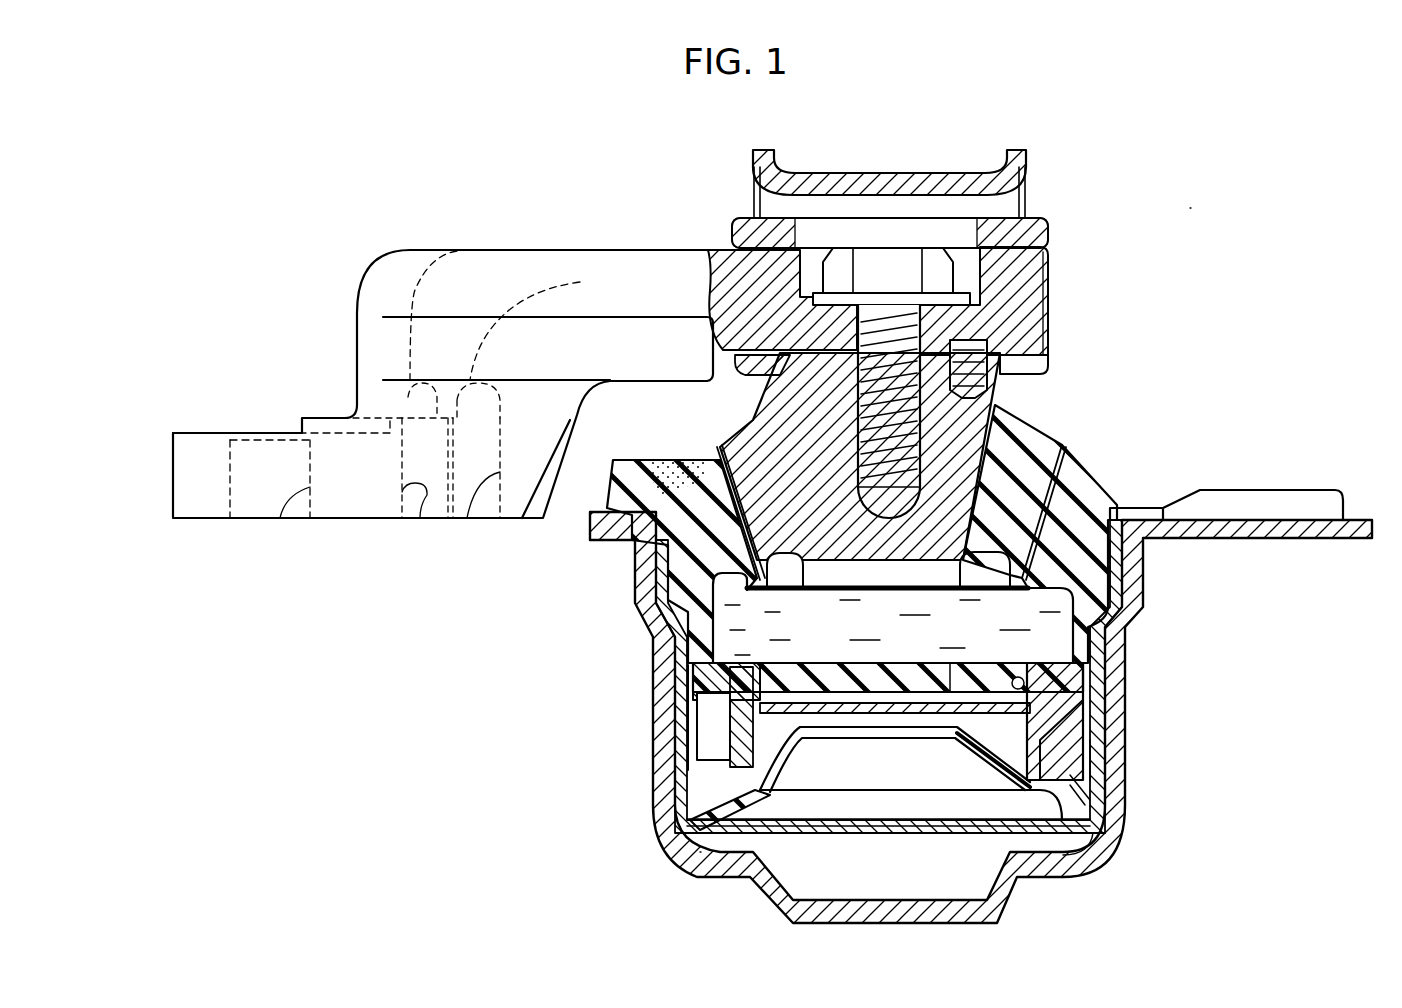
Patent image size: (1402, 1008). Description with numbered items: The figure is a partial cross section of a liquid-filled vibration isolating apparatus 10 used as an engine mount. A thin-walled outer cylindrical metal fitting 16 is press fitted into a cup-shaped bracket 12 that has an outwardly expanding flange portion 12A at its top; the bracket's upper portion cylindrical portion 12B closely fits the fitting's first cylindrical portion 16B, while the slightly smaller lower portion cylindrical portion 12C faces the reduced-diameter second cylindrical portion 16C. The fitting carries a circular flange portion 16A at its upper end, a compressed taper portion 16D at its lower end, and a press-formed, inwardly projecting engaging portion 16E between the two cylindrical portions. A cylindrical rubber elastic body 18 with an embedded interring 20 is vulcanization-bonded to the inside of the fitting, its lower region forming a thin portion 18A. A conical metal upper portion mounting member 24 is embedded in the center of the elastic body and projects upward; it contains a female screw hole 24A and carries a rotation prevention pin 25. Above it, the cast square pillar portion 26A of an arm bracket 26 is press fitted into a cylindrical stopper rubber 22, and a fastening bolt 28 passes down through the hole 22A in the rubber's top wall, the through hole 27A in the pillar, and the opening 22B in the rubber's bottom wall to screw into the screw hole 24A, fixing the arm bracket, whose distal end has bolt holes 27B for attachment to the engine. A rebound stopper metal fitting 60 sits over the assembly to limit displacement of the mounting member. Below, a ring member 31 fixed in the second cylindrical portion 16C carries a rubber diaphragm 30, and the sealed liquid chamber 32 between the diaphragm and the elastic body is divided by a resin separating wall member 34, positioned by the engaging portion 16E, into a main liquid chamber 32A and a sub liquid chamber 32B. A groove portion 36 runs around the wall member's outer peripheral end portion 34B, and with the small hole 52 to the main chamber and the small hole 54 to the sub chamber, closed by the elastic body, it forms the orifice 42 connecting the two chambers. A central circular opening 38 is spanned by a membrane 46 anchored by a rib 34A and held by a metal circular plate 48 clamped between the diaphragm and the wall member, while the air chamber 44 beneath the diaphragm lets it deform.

The vibration isolating apparatus 10 is at (1190, 208).
The bracket 12 is at (668, 868).
The flange portion 12A is at (592, 537).
The upper portion cylindrical portion 12B is at (1142, 583).
The lower portion cylindrical portion 12C is at (1130, 772).
The outer cylindrical metal fitting 16 is at (1118, 672).
The flange portion 16A is at (1140, 506).
The first cylindrical portion 16B is at (1130, 577).
The second cylindrical portion 16C is at (1130, 762).
The taper portion 16D is at (1120, 836).
The engaging portion 16E is at (1128, 630).
The rubber elastic body 18 is at (1082, 490).
The thin portion 18A is at (690, 780).
The interring 20 is at (1063, 445).
The stopper rubber 22 is at (1042, 220).
The hole 22A is at (958, 215).
The opening 22B is at (755, 385).
The upper portion mounting member 24 is at (978, 440).
The screw hole 24A is at (915, 346).
The rotation prevention pin 25 is at (1042, 342).
The arm bracket 26 is at (625, 248).
The square pillar portion 26A is at (1030, 273).
The through hole 27A is at (868, 330).
The bolt holes 27B is at (305, 518).
The fastening bolt 28 is at (918, 300).
The rubber diaphragm 30 is at (880, 740).
The ring member 31 is at (1085, 870).
The liquid chamber 32 is at (558, 631).
The main liquid chamber 32A is at (862, 623).
The sub liquid chamber 32B is at (812, 787).
The separating wall member 34 is at (762, 668).
The rib 34A is at (810, 676).
The outer peripheral end portion 34B is at (700, 696).
The groove portion 36 is at (1118, 720).
The circular opening 38 is at (1022, 665).
The orifice 42 is at (700, 740).
The air chamber 44 is at (873, 874).
The membrane 46 is at (957, 665).
The metal circular plate 48 is at (957, 745).
The small hole 52 is at (722, 670).
The small hole 54 is at (1125, 786).
The rebound stopper metal fitting 60 is at (1027, 142).